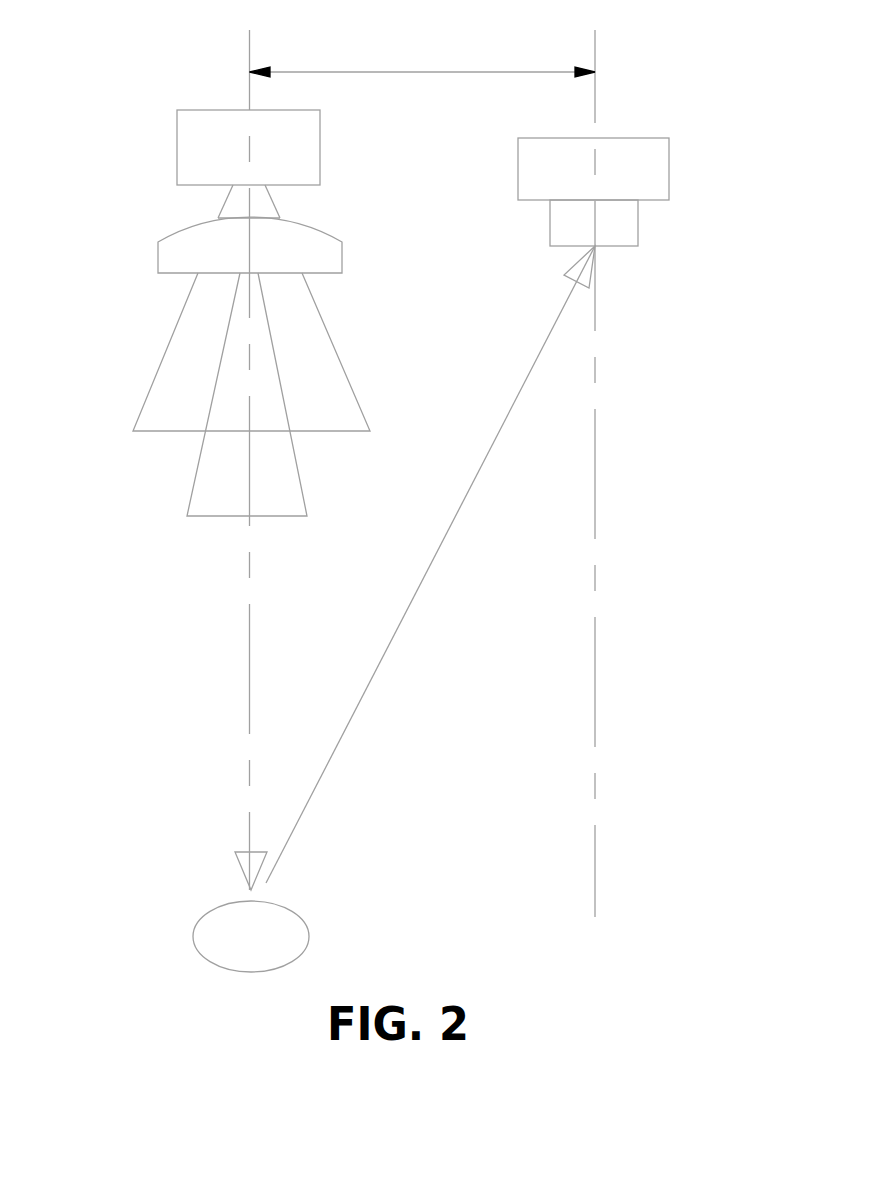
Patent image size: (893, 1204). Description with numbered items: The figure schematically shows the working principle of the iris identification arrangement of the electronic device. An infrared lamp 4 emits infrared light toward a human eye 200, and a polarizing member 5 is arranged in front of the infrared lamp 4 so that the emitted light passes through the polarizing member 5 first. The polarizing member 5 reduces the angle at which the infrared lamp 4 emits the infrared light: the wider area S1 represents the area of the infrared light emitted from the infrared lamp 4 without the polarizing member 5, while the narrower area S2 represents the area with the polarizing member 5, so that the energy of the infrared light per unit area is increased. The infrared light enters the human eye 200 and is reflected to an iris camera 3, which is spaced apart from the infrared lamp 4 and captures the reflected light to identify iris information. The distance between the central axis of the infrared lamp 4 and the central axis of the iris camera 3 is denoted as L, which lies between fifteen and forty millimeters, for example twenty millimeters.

The iris camera 3 is at (630, 182).
The infrared lamp 4 is at (200, 140).
The polarizing member 5 is at (190, 245).
The area of infrared light without polarizing member S1 is at (173, 328).
The area of infrared light with polarizing member S2 is at (202, 448).
The human eye 200 is at (251, 935).
The distance between central axes of infrared lamp and iris camera L is at (423, 58).